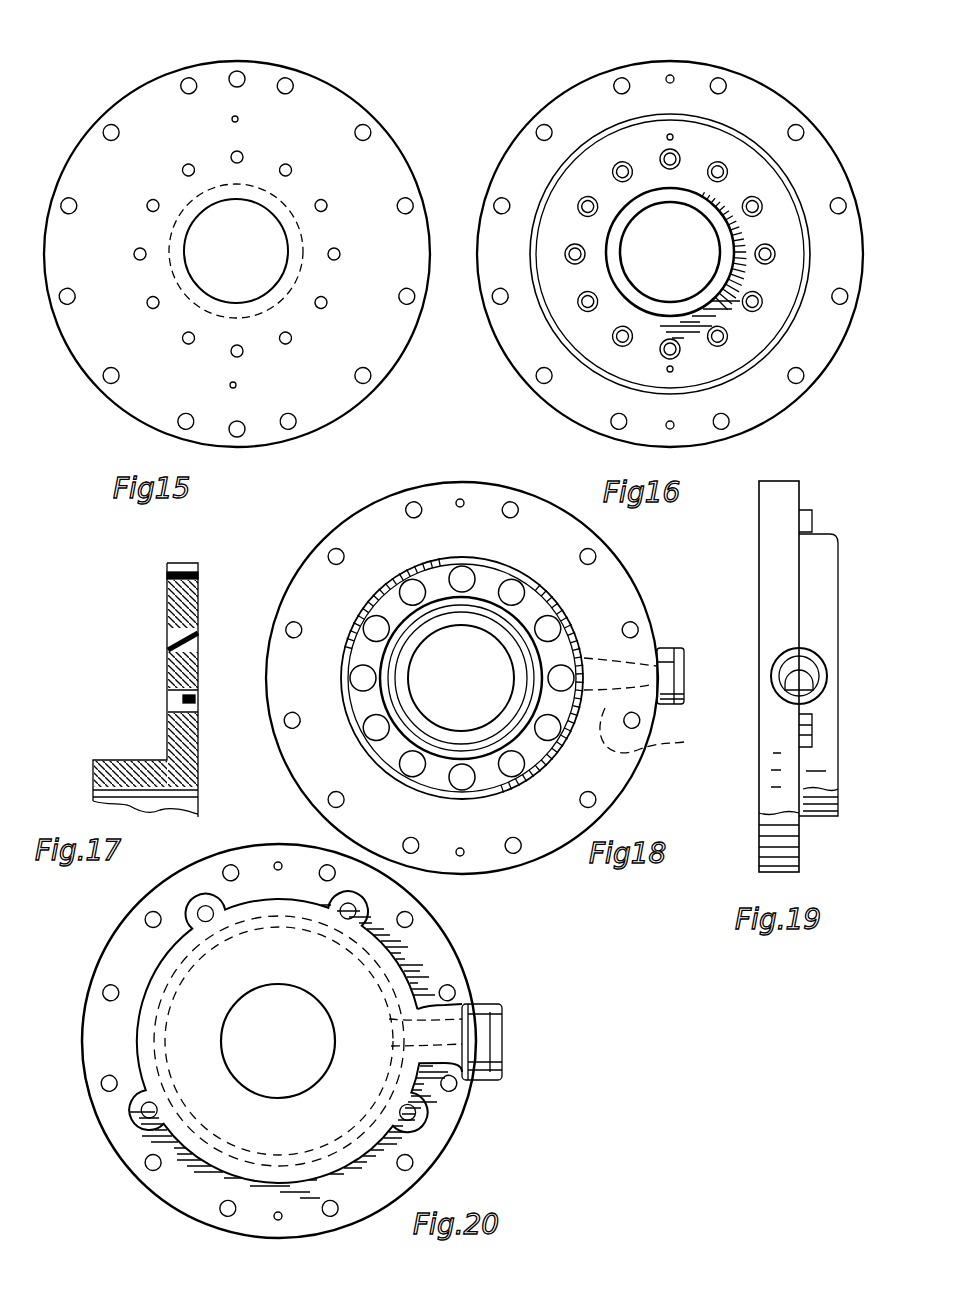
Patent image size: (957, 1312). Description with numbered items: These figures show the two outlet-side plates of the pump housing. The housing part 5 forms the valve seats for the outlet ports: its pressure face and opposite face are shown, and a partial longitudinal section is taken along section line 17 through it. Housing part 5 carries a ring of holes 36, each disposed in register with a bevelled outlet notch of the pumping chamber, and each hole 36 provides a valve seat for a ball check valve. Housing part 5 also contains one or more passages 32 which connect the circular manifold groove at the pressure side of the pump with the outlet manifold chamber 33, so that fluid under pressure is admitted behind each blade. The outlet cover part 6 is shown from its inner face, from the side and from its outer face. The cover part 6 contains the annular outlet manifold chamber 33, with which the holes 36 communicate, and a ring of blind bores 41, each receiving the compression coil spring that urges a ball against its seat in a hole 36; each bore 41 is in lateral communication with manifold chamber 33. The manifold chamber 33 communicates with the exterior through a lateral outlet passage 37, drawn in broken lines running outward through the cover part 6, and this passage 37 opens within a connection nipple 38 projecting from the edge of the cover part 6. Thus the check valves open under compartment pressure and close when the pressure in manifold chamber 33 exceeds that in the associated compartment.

In FIG. 15, the housing part forming valve seats 5 is at (326, 406).
In FIG. 16, the housing part forming valve seats 5 is at (511, 344).
In FIG. 17, the housing part forming valve seats 5 is at (137, 757).
In FIG. 18, the outlet cover part 6 is at (617, 582).
In FIG. 19, the outlet cover part 6 is at (779, 534).
In FIG. 20, the outlet cover part 6 is at (425, 940).
In FIG. 16, the section line 17— 17 is at (607, 28).
In FIG. 15, the passages 32 is at (237, 387).
In FIG. 16, the passages 32 is at (670, 375).
In FIG. 17, the passages 32 is at (198, 637).
In FIG. 18, the outlet manifold chamber 33 is at (497, 566).
In FIG. 15, the holes 36 is at (233, 348).
In FIG. 16, the holes 36 is at (618, 348).
In FIG. 17, the holes 36 is at (198, 705).
In FIG. 18, the lateral outlet passage 37 is at (684, 742).
In FIG. 19, the lateral outlet passage 37 is at (795, 694).
In FIG. 20, the lateral outlet passage 37 is at (484, 999).
In FIG. 18, the connection nipple 38 is at (666, 648).
In FIG. 19, the connection nipple 38 is at (788, 661).
In FIG. 20, the connection nipple 38 is at (500, 1004).
In FIG. 18, the blind bore 41 is at (514, 780).